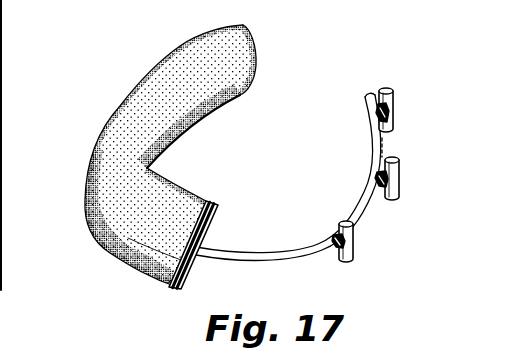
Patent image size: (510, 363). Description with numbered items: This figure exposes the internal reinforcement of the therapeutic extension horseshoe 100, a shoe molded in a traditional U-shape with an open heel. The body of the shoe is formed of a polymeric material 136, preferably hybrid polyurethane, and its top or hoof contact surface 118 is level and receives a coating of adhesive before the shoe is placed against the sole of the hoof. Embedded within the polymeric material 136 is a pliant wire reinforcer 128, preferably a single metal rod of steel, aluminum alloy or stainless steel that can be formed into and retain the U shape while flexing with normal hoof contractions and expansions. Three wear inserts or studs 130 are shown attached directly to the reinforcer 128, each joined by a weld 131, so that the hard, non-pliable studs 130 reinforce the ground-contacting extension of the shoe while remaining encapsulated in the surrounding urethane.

The therapeutic extension horseshoe 100 is at (114, 87).
The top or hoof contact surface 118 is at (160, 66).
The reinforcer 128 is at (288, 231).
The wear inserts or studs 130 is at (394, 106).
The weld 131 is at (370, 109).
The polymeric material 136 is at (214, 208).